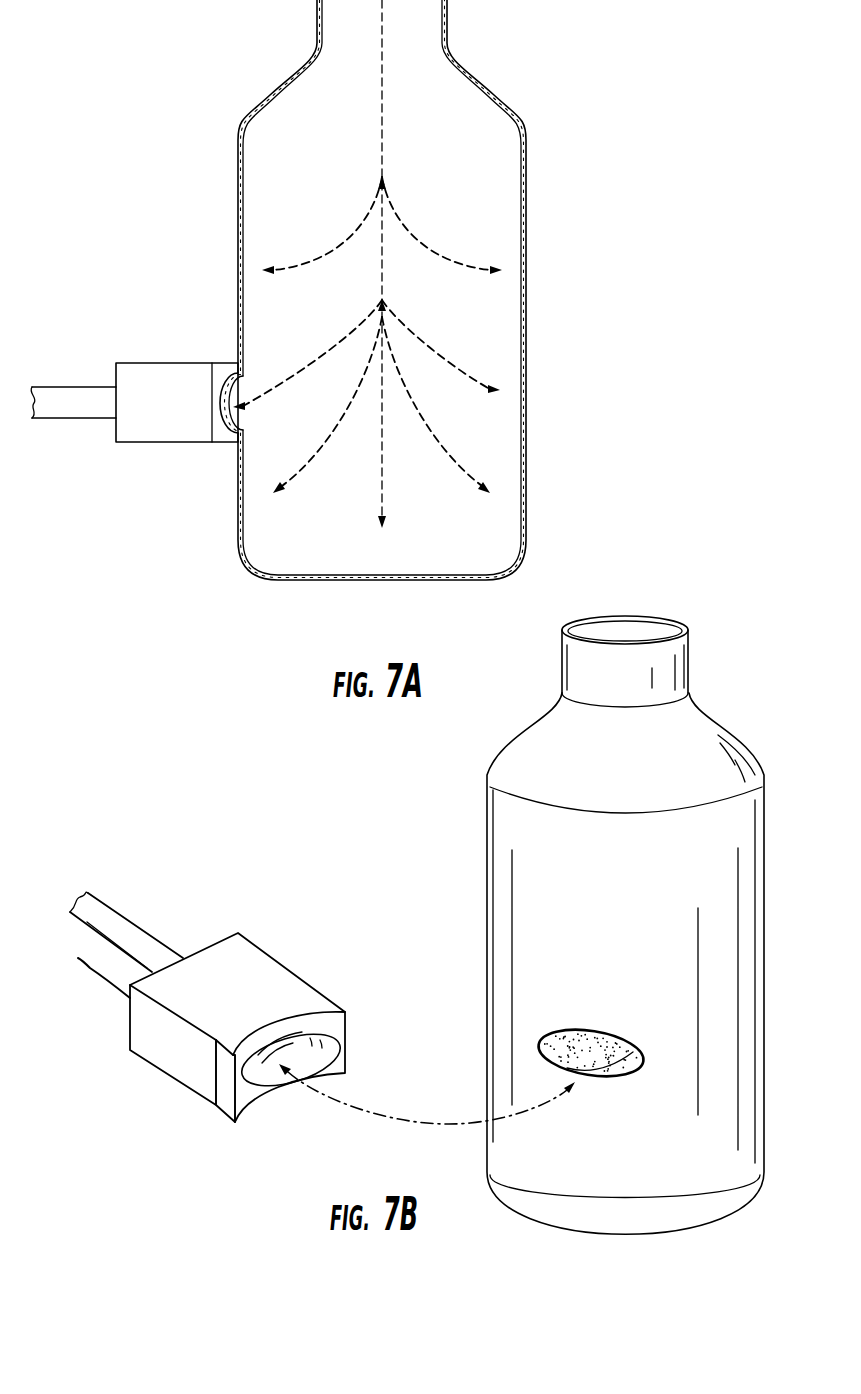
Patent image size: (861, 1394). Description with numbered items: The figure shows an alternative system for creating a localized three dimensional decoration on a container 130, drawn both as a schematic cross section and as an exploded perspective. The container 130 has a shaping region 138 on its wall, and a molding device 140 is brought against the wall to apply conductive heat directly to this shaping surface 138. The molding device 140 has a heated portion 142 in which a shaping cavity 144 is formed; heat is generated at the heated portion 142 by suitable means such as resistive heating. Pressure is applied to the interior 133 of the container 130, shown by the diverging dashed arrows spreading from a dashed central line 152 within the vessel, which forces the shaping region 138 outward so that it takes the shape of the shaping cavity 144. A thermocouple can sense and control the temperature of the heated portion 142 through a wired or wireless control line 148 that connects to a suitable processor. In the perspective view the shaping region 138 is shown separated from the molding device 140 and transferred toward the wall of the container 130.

In FIG. 7A, the container 130 is at (526, 222).
In FIG. 7B, the container 130 is at (764, 900).
In FIG. 7A, the interior 133 is at (463, 322).
In FIG. 7A, the shaping region 138 is at (236, 386).
In FIG. 7B, the shaping region 138 is at (572, 1040).
In FIG. 7A, the molding device 140 is at (155, 442).
In FIG. 7B, the molding device 140 is at (277, 955).
In FIG. 7B, the heated portion 142 is at (220, 1097).
In FIG. 7B, the shaping cavity 144 is at (268, 1075).
In FIG. 7B, the control line 148 is at (82, 972).
In FIG. 7A, the central axis 152 is at (383, 157).